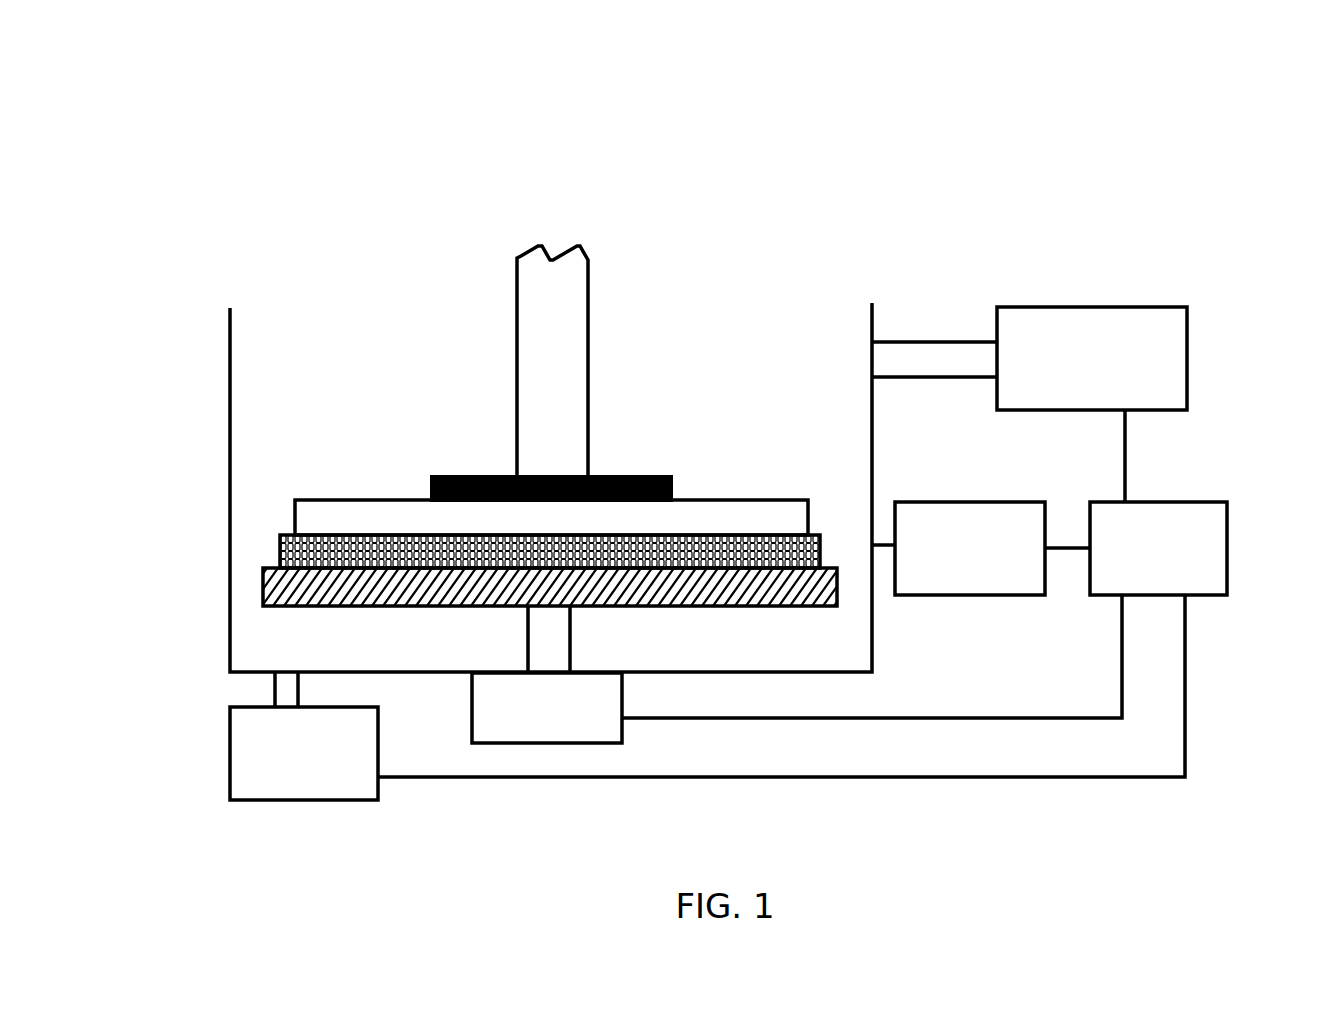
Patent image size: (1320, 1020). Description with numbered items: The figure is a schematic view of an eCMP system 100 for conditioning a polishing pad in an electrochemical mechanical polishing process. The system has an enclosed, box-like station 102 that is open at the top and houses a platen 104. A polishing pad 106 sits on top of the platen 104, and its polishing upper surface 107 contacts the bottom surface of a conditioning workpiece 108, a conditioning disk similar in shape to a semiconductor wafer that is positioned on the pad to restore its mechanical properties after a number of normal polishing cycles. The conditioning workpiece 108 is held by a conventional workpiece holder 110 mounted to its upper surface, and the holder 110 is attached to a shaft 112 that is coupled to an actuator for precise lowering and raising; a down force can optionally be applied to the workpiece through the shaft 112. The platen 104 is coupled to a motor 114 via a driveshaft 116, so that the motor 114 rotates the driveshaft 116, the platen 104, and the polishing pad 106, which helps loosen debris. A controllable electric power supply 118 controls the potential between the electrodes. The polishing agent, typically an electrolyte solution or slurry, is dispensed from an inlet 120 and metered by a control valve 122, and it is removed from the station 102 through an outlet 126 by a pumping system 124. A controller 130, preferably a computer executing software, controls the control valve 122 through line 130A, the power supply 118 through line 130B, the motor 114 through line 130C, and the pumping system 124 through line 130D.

The eCMP system 100 is at (488, 153).
The station 102 is at (230, 345).
The platen 104 is at (632, 595).
The polishing pad 106 is at (813, 550).
The polishing upper surface 107 is at (283, 535).
The conditioning workpiece 108 is at (422, 512).
The workpiece holder 110 is at (612, 477).
The shaft 112 is at (553, 378).
The motor 114 is at (547, 708).
The driveshaft 116 is at (545, 660).
The electric power supply 118 is at (958, 548).
The inlet 120 is at (893, 348).
The control valve 122 is at (1092, 358).
The pumping system 124 is at (304, 753).
The outlet 126 is at (292, 697).
The controller 130 is at (1158, 548).
The line 130A is at (1127, 462).
The line 130B is at (1065, 546).
The line 130C is at (1120, 653).
The line 130D is at (1188, 698).